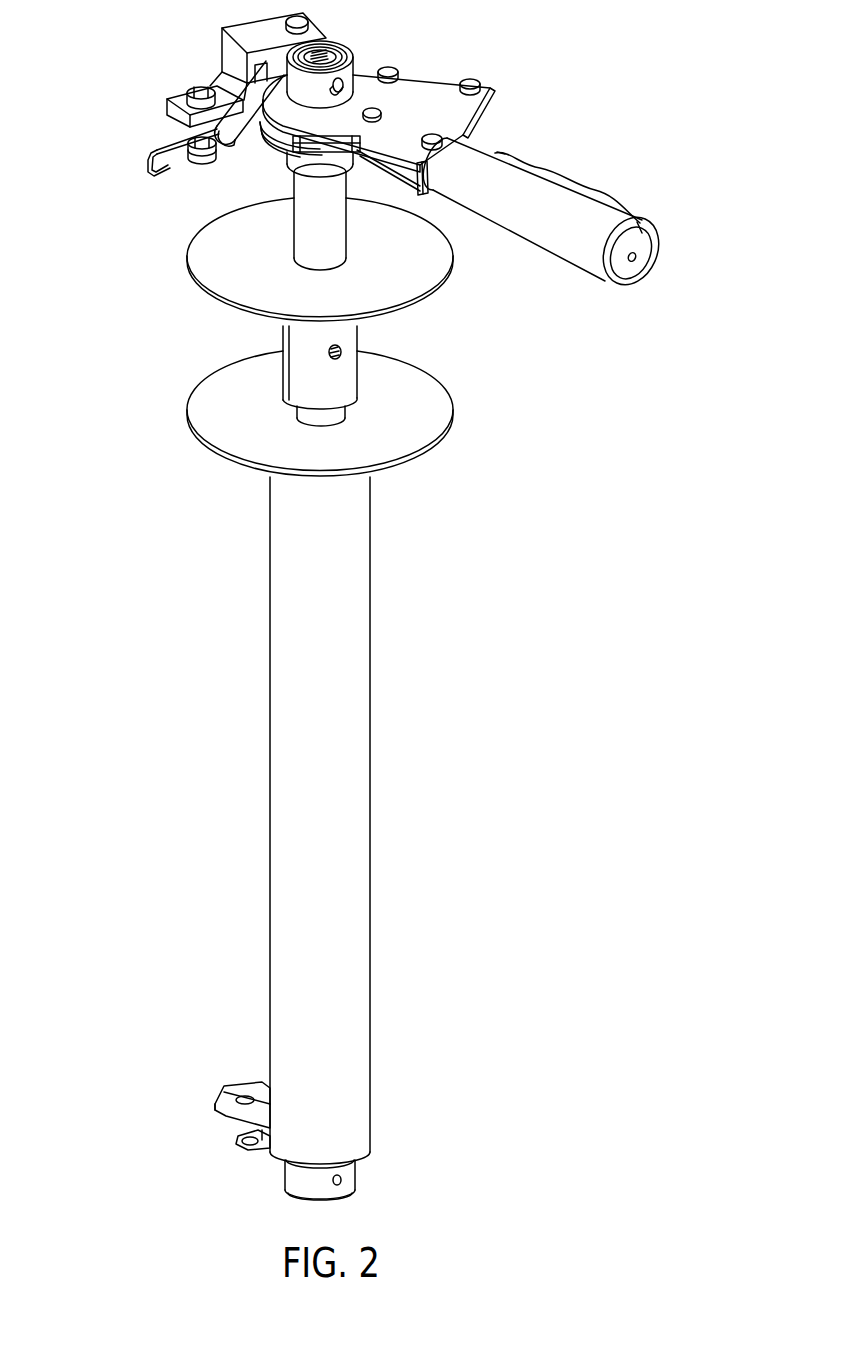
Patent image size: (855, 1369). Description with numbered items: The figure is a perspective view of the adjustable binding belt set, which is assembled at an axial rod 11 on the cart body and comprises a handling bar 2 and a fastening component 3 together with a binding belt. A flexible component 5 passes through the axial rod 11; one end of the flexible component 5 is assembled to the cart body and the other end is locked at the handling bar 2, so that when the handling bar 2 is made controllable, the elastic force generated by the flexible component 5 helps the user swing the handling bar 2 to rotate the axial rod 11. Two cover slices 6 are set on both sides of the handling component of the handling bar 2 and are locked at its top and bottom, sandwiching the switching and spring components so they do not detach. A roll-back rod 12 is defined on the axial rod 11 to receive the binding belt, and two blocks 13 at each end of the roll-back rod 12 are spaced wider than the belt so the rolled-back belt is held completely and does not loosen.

The handling bar 2 is at (503, 112).
The fastening component 3 is at (183, 67).
The flexible component 5 is at (290, 126).
The cover slice 6 is at (417, 80).
The axial rod 11 is at (312, 230).
The roll-back rod 12 is at (258, 369).
The block 13 is at (240, 415).